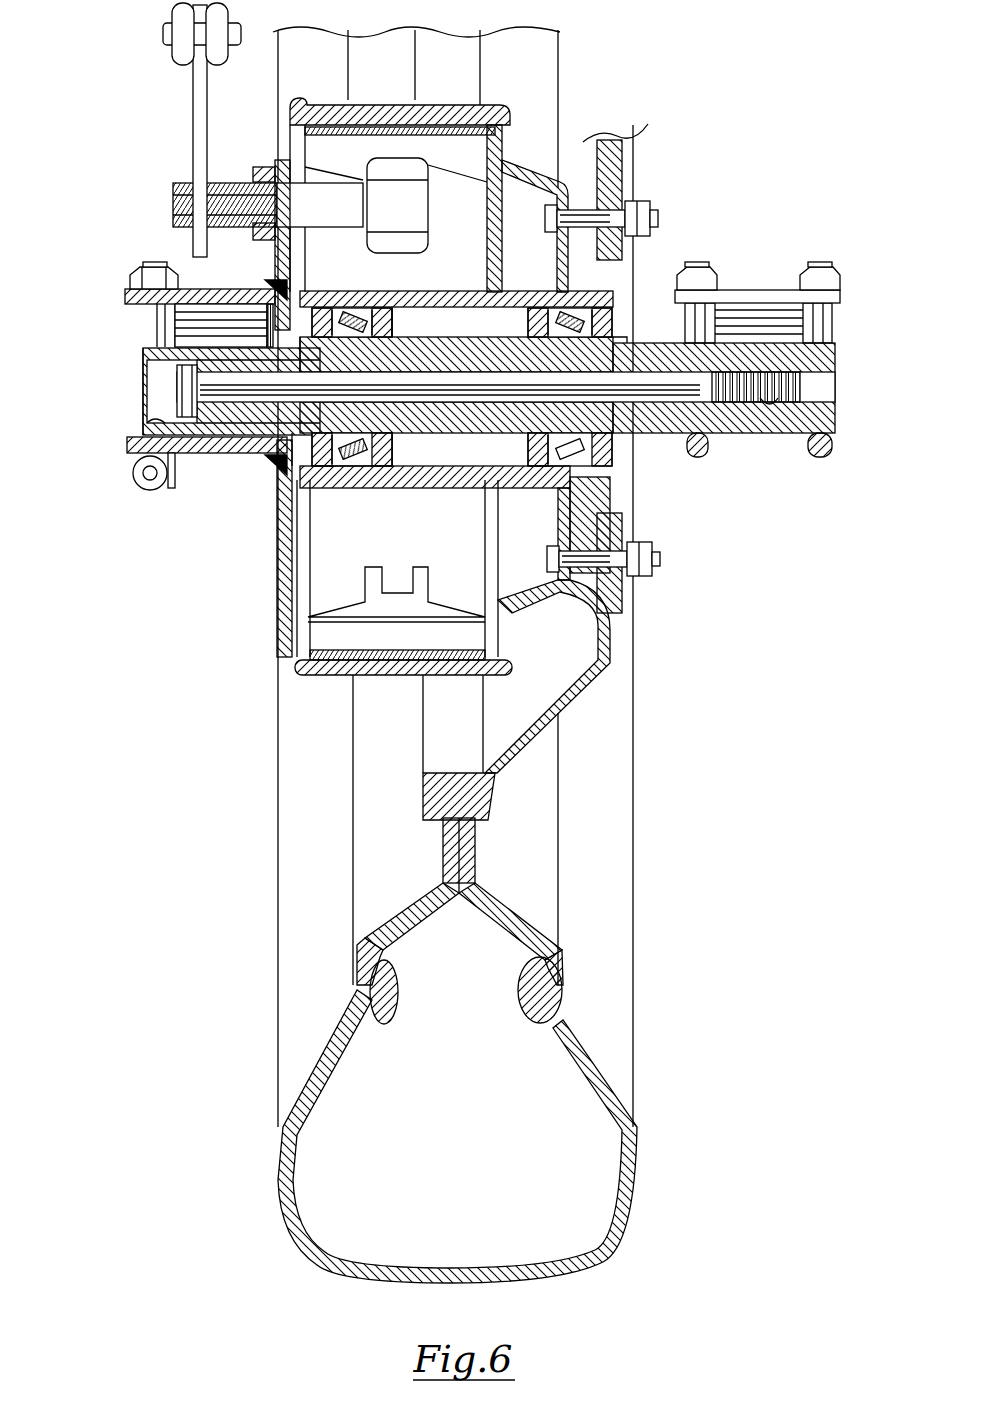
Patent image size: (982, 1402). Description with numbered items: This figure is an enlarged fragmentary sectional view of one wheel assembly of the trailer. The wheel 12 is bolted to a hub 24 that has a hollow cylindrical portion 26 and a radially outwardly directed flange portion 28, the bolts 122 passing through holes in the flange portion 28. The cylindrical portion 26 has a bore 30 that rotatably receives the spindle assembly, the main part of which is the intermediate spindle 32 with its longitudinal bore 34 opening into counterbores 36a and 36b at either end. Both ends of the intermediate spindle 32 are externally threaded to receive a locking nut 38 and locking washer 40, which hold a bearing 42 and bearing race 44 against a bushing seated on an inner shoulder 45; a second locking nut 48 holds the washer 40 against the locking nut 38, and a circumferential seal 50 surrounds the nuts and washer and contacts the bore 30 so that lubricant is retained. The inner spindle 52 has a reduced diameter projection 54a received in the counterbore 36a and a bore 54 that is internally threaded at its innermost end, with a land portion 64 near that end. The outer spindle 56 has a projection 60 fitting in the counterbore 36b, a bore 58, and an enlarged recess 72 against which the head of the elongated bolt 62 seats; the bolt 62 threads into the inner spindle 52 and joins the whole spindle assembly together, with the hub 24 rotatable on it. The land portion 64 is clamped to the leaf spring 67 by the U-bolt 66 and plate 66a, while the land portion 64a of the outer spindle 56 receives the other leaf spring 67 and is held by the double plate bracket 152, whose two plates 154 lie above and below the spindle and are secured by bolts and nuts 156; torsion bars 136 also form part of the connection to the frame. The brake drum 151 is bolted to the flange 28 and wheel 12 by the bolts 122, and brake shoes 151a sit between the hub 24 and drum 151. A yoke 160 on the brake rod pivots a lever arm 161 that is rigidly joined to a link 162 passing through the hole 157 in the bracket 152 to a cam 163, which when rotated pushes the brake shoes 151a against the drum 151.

The wheel 12 is at (570, 700).
The hub 24 is at (598, 508).
The hollow cylindrical portion 26 is at (420, 300).
The flange portion 28 is at (612, 496).
The bore 30 is at (450, 486).
The intermediate spindle 32 is at (426, 428).
The longitudinal bore 34 is at (488, 372).
The counterbore 36a is at (598, 355).
The counterbore 36b is at (318, 350).
The locking nut 38 is at (607, 295).
The locking washer 40 is at (345, 325).
The bearing 42 is at (375, 322).
The bearing race 44 is at (530, 327).
The inner shoulder 45 is at (385, 340).
The second locking nut 48 is at (572, 437).
The circumferential seal 50 is at (614, 472).
The inner spindle 52 is at (684, 433).
The bore 54 is at (620, 380).
The reduced diameter projection 54a is at (775, 400).
The outer spindle 56 is at (218, 424).
The bore 58 is at (232, 382).
The projection 60 is at (318, 420).
The elongated bolt 62 is at (175, 388).
The land portion 64 is at (800, 337).
The land portion 64a is at (160, 358).
The U-bolt 66 is at (832, 445).
The plate 66a is at (748, 290).
The leaf spring 67 is at (180, 318).
The enlarged recess 72 is at (155, 418).
The bolt 122 is at (660, 556).
The torsion bar 136 is at (133, 478).
The brake drum 151 is at (400, 675).
The brake shoe 151a is at (350, 618).
The double plate bracket 152 is at (275, 470).
The plate 154 is at (125, 292).
The bolt and nut 156 is at (135, 268).
The hole 157 is at (232, 195).
The yoke 160 is at (228, 3).
The lever arm 161 is at (190, 112).
The link 162 is at (313, 220).
The cam 163 is at (377, 211).